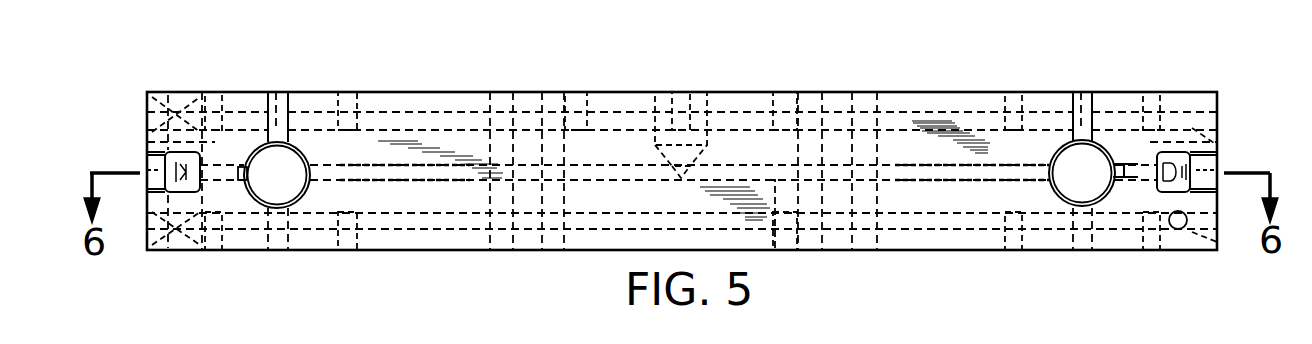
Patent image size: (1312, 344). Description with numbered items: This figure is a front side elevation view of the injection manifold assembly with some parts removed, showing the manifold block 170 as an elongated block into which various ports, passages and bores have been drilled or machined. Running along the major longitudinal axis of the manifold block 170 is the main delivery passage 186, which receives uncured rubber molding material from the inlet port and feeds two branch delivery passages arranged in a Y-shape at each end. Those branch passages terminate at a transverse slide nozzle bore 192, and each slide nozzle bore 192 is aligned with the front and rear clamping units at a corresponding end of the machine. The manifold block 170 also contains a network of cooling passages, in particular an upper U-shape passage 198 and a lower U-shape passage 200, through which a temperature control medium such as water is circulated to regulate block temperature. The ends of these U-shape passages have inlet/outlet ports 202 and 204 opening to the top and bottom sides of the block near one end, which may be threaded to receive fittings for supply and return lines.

The manifold block 170 is at (863, 250).
The main delivery passage 186 is at (775, 250).
The slide nozzle bore 192 is at (298, 160).
The upper U-shape passage 198 is at (422, 108).
The lower U-shape passage 200 is at (405, 232).
The inlet/outlet port 202 is at (232, 102).
The inlet/outlet port 204 is at (230, 245).